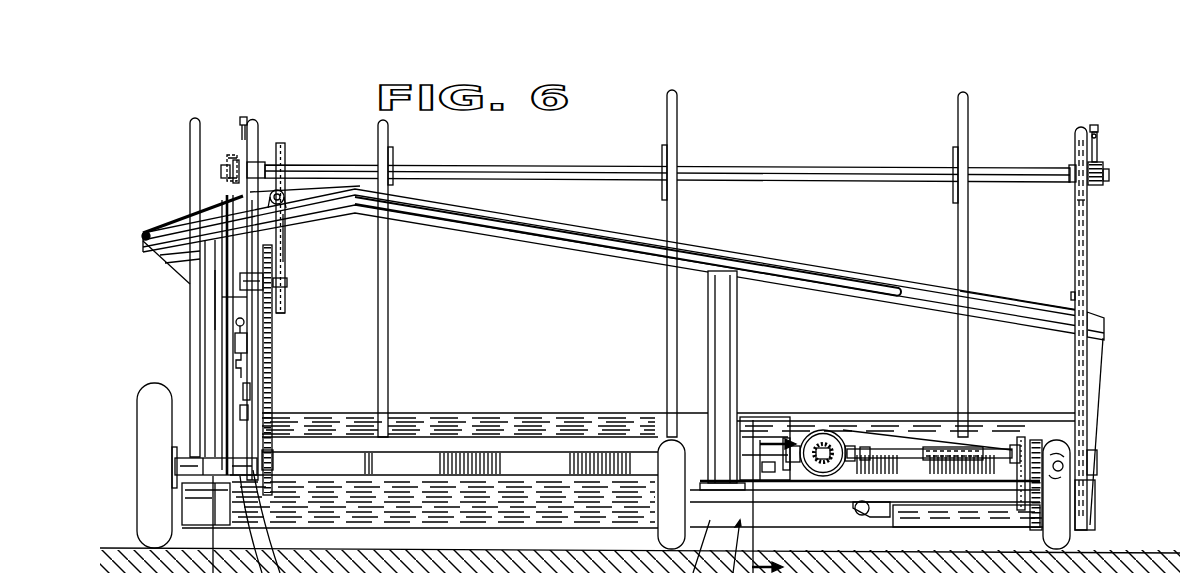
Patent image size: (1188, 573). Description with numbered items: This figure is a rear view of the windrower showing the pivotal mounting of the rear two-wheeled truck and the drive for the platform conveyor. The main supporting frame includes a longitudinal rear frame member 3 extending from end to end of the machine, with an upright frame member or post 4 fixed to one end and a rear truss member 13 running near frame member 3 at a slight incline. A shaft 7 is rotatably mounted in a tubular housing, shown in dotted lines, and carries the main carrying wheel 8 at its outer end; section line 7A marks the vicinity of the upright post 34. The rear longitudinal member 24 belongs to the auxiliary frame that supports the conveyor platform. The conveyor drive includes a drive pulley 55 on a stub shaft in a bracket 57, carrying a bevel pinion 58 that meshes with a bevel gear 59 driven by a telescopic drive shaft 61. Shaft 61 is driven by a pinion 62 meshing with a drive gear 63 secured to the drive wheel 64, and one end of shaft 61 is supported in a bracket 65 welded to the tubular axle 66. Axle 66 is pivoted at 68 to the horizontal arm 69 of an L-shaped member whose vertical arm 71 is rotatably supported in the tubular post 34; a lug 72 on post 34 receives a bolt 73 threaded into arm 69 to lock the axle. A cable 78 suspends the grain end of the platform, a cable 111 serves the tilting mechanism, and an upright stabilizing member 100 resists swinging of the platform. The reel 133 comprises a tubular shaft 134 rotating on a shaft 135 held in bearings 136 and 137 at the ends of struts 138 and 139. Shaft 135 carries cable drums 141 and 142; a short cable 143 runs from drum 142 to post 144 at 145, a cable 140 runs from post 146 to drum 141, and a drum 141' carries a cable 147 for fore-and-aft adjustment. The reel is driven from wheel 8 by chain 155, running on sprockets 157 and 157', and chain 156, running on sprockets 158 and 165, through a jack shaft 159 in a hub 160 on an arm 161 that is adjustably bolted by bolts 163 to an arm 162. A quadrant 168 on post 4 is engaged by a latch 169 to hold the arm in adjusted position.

The longitudinal rear frame member 3 is at (1010, 308).
The upright frame member or post 4 is at (215, 329).
The shaft 7 is at (744, 478).
The section line 7A is at (170, 453).
The main carrying wheel 8 is at (137, 512).
The rear truss member 13 is at (823, 277).
The rear longitudinal member 24 is at (600, 437).
The upright frame member or post 34 is at (725, 355).
The drive pulley or sheave 55 is at (846, 430).
The bracket 57 is at (788, 440).
The bevel pinion 58 is at (828, 440).
The bevel gear 59 is at (815, 433).
The telescopic drive shaft 61 is at (892, 445).
The pinion 62 is at (1036, 440).
The drive gear 63 is at (1033, 518).
The drive wheel 64 is at (1062, 538).
The bracket 65 is at (1020, 442).
The tubular axle 66 is at (960, 502).
The pivot 68 is at (875, 515).
The horizontal arm 69 is at (818, 506).
The vertical arm or leg 71 is at (808, 505).
The lug 72 is at (748, 490).
The bolt 73 is at (770, 462).
The cable 78 is at (1106, 328).
The upright stabilizing member 100 is at (190, 133).
The cable 111 is at (160, 269).
The reel 133 is at (684, 100).
The tubular shaft 134 is at (845, 166).
The shaft 135 is at (1110, 175).
The bearing 136 is at (262, 162).
The bearing 137 is at (1072, 165).
The strut 138 is at (221, 172).
The strut 139 is at (1087, 222).
The cable 140 is at (242, 118).
The cable drum 141 is at (194, 159).
The drum 141' is at (183, 136).
The cable drum 142 is at (1103, 168).
The short cable 143 is at (1098, 142).
The upright supporting member or post 144 is at (1076, 135).
The cable attachment 145 is at (1094, 125).
The post 146 is at (258, 135).
The cable 147 is at (233, 170).
The chain 155 is at (273, 360).
The chain 156 is at (292, 268).
The sprocket 157 is at (298, 451).
The sprocket 157' is at (322, 239).
The sprocket 158 is at (281, 313).
The jack shaft 159 is at (290, 283).
The hub 160 is at (284, 260).
The arm 161 is at (247, 300).
The arm 162 is at (243, 413).
The bolts 163 is at (255, 397).
The sprocket 165 is at (285, 147).
The quadrant 168 is at (235, 362).
The latch 169 is at (236, 325).